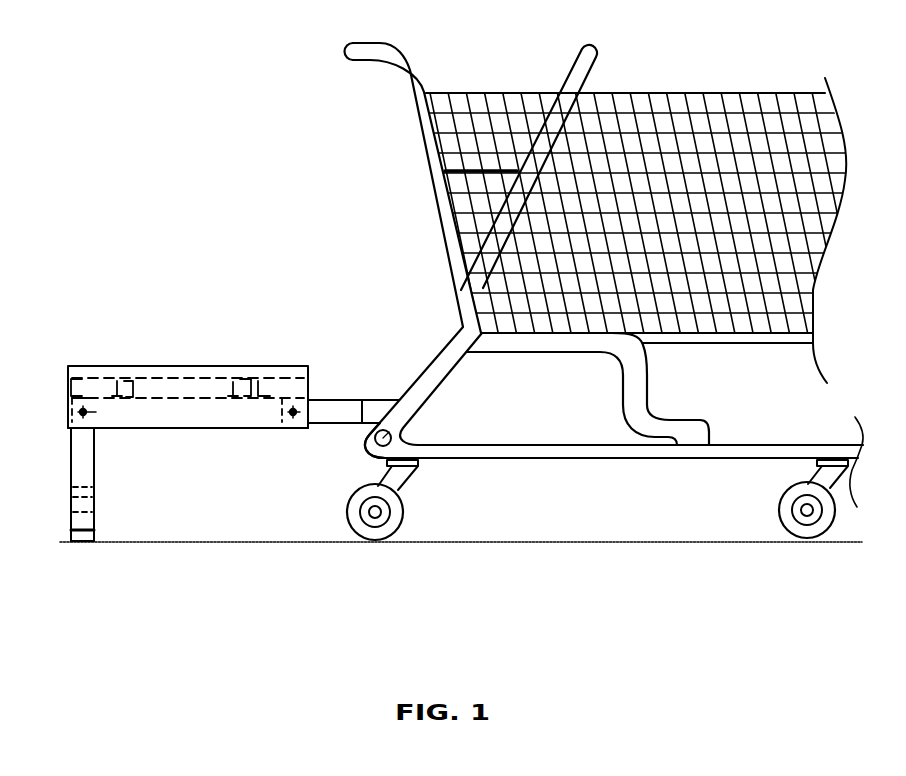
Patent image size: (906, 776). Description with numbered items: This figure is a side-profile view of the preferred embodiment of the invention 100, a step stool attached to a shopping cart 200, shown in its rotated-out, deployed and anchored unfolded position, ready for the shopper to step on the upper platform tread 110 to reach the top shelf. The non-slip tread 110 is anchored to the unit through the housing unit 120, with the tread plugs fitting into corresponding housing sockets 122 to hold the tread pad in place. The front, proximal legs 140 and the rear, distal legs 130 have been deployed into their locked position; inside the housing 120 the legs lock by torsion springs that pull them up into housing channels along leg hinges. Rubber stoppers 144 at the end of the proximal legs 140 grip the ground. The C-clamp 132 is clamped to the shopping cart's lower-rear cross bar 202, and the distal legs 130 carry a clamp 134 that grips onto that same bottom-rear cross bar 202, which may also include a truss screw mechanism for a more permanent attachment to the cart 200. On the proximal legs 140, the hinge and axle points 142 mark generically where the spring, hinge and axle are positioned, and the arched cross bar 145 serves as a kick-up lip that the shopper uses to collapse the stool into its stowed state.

The invention 100 is at (228, 265).
The upper platform tread 110 is at (200, 365).
The housing unit 120 is at (172, 430).
The housing sockets 122 is at (130, 377).
The rear distal legs 130 is at (322, 399).
The C-clamp 132 is at (293, 420).
The clamp 134 is at (365, 435).
The front proximal legs 140 is at (95, 480).
The hinge and axle points 142 is at (93, 413).
The rubber stoppers 144 is at (85, 533).
The arched cross bar 145 is at (88, 505).
The shopping cart 200 is at (338, 102).
The lower-rear cross bar 202 is at (392, 435).